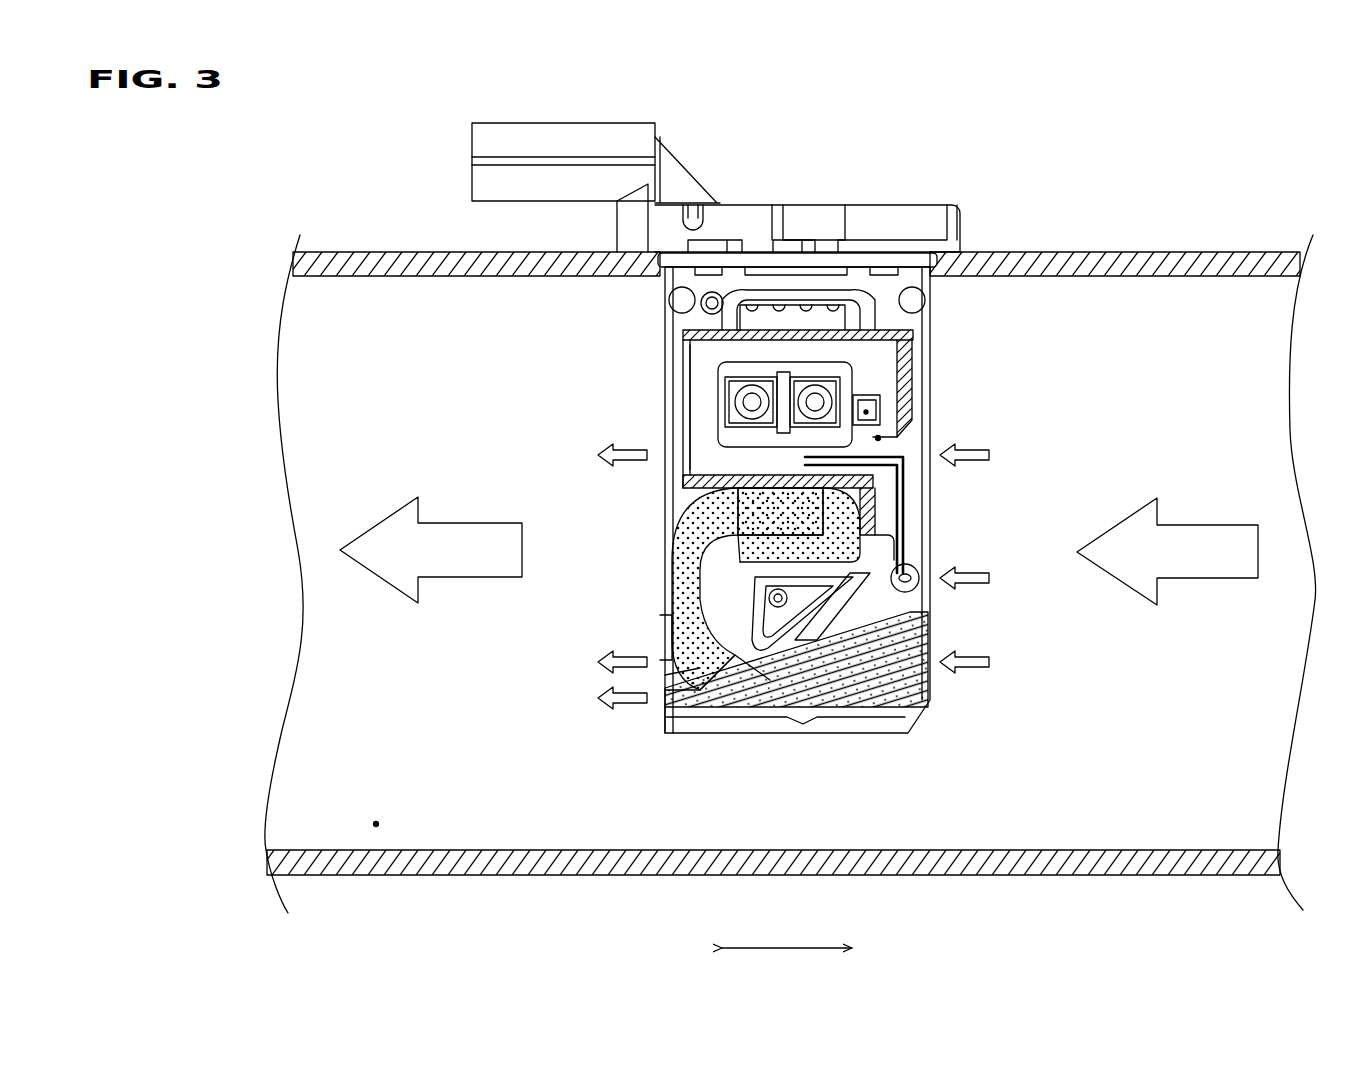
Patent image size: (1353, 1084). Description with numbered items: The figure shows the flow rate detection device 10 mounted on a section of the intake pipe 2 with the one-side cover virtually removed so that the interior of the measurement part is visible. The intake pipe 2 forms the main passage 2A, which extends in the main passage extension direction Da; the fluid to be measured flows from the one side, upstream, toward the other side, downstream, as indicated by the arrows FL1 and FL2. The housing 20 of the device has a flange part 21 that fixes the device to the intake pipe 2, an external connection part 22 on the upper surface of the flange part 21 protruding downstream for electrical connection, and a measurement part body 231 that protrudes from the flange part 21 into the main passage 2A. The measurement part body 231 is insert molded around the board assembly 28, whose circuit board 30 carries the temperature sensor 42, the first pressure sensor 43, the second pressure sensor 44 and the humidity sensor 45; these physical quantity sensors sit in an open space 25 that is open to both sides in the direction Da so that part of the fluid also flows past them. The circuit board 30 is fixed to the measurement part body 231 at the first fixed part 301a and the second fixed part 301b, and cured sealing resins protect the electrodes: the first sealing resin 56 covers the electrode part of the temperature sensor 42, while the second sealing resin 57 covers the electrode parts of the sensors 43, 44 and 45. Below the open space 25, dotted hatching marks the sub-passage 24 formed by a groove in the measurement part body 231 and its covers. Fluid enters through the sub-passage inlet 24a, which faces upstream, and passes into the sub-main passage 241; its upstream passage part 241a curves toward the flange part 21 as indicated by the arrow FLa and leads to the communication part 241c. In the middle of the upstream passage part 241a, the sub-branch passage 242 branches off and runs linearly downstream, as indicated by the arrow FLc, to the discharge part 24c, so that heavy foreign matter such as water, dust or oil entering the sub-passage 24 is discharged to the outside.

The intake pipe 2 is at (356, 248).
The main passage 2A is at (376, 827).
The flow rate detection device 10 is at (808, 128).
The housing 20 is at (905, 198).
The flange part 21 is at (866, 218).
The external connection part 22 is at (522, 140).
The measurement part body 231 is at (925, 300).
The circuit board 30 is at (915, 492).
The first fixed part 301a is at (688, 385).
The second fixed part 301b is at (700, 478).
The first sealing resin 56 is at (920, 575).
The second sealing resin 57 is at (745, 360).
The second pressure sensor 44 is at (722, 405).
The first pressure sensor 43 is at (870, 392).
The humidity sensor 45 is at (882, 412).
The open space 25 is at (880, 436).
The board assembly 28 is at (935, 468).
The temperature sensor 42 is at (918, 583).
The sub-main passage 241 is at (825, 547).
The communication part 241c is at (700, 515).
The upstream passage part 241a is at (762, 700).
The sub-branch passage 242 is at (695, 660).
The sub-passage 24 is at (665, 612).
The sub-passage inlet 24a is at (932, 670).
The discharge part 24c is at (660, 700).
The flow of the fluid to be measured FL1 is at (1207, 525).
The flow of the fluid to be measured FL2 is at (465, 523).
The flow in the upstream passage part FLa is at (690, 585).
The flow in the sub-branch passage FLc is at (710, 690).
The main passage extension direction Da is at (788, 948).